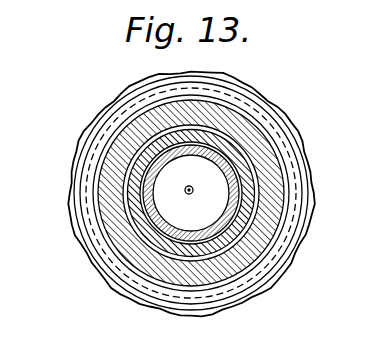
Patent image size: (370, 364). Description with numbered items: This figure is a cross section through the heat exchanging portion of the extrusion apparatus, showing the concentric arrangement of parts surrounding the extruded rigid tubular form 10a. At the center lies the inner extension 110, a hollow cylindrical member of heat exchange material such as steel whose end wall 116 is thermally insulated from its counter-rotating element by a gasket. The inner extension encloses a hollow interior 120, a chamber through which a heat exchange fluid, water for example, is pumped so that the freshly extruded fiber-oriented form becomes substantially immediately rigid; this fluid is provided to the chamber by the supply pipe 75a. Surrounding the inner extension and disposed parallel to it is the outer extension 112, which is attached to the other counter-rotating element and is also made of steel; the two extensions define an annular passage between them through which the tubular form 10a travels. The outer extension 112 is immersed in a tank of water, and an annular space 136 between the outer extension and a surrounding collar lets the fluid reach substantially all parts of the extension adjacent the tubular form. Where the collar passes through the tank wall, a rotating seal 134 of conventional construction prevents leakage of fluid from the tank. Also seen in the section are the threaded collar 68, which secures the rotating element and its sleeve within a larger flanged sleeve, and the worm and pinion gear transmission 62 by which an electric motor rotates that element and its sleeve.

The extruded rigid tubular form 10a is at (157, 222).
The worm and pinion gear transmission 62 is at (280, 113).
The rotating seal 134 is at (268, 155).
The threaded collar 68 is at (115, 140).
The hollow interior 120 is at (163, 192).
The annular space 136 is at (227, 137).
The outer extension 112 is at (246, 207).
The inner extension 110 is at (262, 185).
The end wall 116 is at (200, 176).
The supply pipe 75a is at (189, 194).